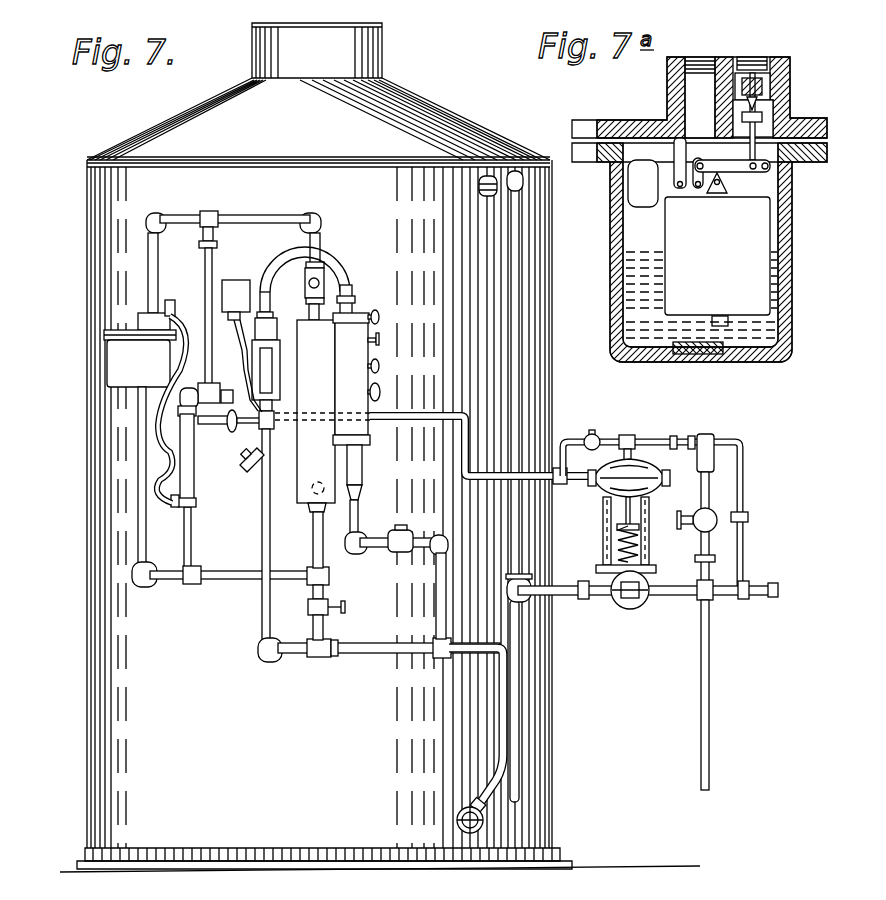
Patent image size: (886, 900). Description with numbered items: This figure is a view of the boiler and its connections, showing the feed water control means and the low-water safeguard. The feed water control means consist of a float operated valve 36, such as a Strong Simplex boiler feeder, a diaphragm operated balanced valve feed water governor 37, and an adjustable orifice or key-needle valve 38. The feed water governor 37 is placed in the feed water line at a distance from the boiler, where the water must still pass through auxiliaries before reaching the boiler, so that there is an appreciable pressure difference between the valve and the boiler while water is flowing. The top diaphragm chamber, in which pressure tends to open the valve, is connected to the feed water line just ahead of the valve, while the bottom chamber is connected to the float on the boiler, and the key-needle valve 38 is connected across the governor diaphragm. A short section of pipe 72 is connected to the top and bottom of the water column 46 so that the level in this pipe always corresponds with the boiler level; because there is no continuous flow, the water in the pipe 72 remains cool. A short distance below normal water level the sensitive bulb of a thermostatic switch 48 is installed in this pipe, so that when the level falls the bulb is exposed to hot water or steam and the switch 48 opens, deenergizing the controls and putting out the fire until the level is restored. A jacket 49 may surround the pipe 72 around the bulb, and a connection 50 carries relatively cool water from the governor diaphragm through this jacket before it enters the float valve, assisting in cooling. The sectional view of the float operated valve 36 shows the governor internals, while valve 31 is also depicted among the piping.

In FIG. 7, the valve 31 is at (641, 603).
In FIG. 7, the float operated valve 36 is at (118, 372).
In FIG. 7A, the float operated valve 36 is at (783, 240).
In FIG. 7, the feed water governor 37 is at (621, 516).
In FIG. 7, the key-needle valve 38 is at (594, 433).
In FIG. 7, the water column 46 is at (346, 317).
In FIG. 7, the thermostatic switch 48 is at (233, 287).
In FIG. 7, the jacket 49 is at (189, 474).
In FIG. 7, the connection 50 is at (398, 416).
In FIG. 7, the pipe 72 is at (191, 540).